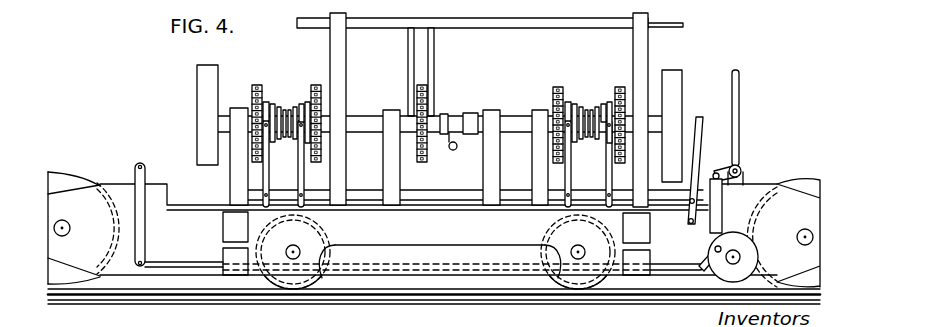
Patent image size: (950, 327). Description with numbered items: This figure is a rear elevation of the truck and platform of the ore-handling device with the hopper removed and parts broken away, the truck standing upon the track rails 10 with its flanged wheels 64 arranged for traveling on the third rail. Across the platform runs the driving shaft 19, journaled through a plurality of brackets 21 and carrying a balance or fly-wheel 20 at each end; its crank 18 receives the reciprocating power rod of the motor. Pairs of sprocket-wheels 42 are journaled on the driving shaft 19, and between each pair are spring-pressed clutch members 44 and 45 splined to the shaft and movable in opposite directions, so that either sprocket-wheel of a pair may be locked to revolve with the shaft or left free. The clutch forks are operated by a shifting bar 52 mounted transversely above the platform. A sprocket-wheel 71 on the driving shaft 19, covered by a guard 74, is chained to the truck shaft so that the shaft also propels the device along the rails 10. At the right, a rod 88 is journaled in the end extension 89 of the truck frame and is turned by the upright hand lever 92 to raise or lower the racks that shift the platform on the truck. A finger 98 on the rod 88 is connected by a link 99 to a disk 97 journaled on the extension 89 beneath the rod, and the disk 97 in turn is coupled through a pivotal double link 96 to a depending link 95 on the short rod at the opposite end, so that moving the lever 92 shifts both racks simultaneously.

The rails 10 is at (448, 297).
The crank 18 is at (466, 114).
The driving shaft 19 is at (362, 116).
The fly-wheel 20 is at (200, 117).
The bracket 21 is at (494, 112).
The sprocket-wheel 42 is at (438, 126).
The clutch member 44 is at (263, 100).
The clutch member 45 is at (319, 85).
The shifting bar 52 is at (442, 198).
The flanged wheel 64 is at (330, 260).
The sprocket-wheel 71 is at (425, 90).
The guard 74 is at (430, 53).
The rod 88 is at (742, 167).
The end extension 89 is at (771, 233).
The hand lever 92 is at (740, 92).
The depending link 95 is at (145, 233).
The double link 96 is at (670, 266).
The disk 97 is at (733, 238).
The finger 98 is at (723, 168).
The link 99 is at (716, 212).